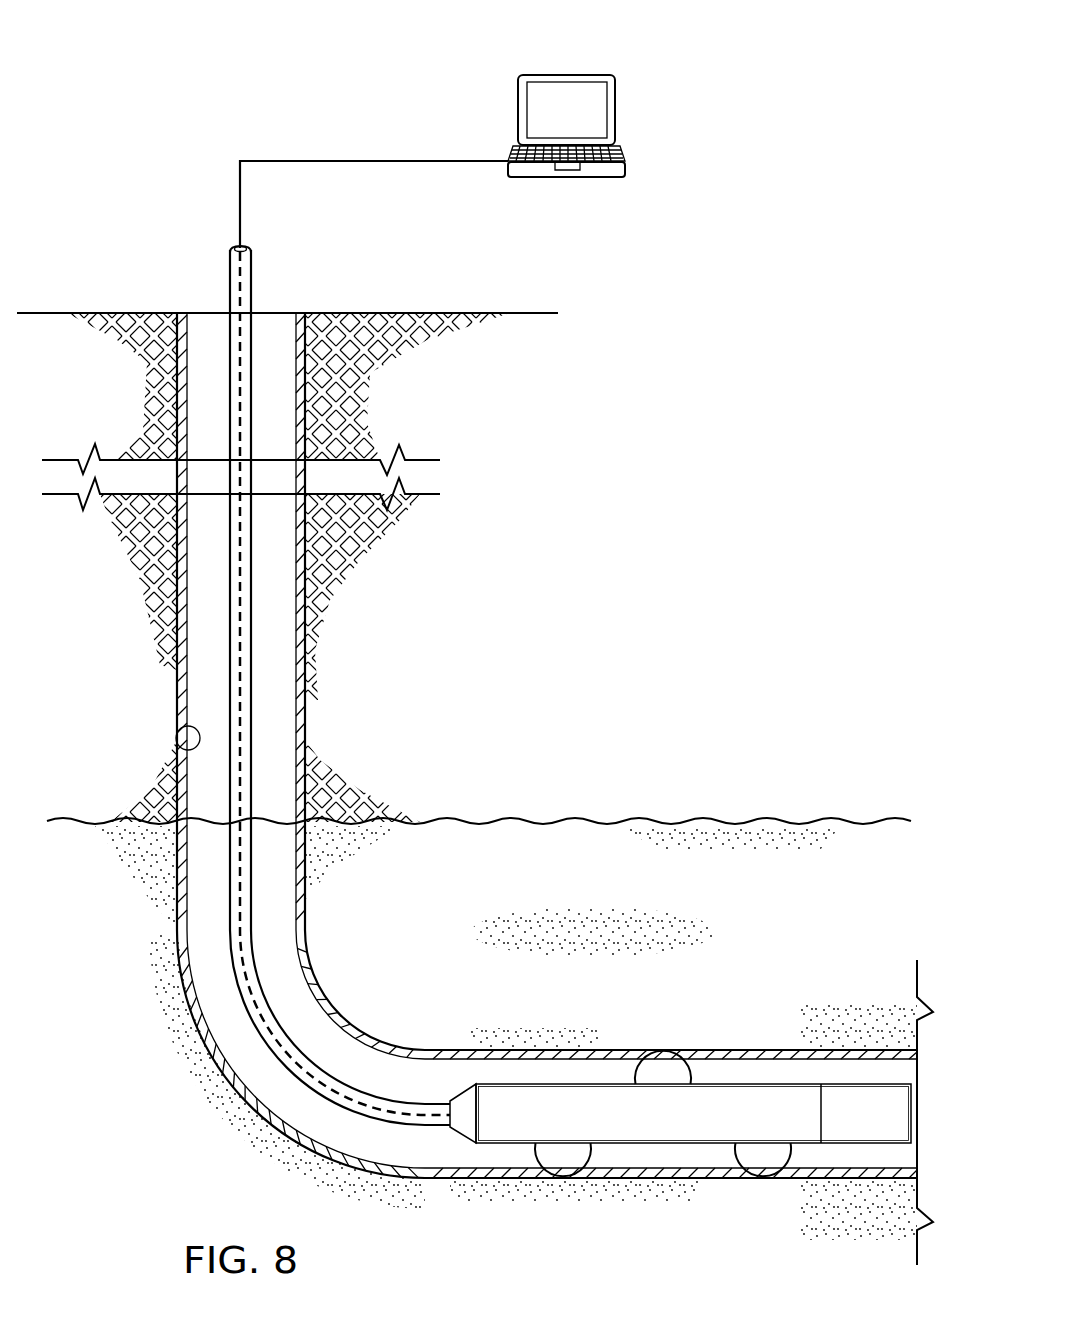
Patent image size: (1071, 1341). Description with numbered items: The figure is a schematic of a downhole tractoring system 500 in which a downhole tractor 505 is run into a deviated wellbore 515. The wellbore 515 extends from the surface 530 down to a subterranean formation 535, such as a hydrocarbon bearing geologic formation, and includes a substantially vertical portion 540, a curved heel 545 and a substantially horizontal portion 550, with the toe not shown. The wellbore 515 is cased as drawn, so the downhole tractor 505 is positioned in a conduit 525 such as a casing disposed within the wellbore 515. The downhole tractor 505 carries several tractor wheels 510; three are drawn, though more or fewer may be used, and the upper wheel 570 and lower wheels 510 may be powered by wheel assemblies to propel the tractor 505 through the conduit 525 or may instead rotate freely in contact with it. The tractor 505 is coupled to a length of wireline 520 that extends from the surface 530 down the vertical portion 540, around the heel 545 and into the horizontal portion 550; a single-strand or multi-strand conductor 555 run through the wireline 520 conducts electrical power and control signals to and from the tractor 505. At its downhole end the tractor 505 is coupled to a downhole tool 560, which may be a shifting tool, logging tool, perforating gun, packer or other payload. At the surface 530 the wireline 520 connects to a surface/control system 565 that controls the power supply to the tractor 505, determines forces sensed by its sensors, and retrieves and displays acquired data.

The downhole tractoring system 500 is at (188, 62).
The downhole tractor 505 is at (667, 1135).
The tractor wheel 510 is at (733, 1168).
The wellbore 515 is at (176, 984).
The wireline 520 is at (229, 721).
The conduit 525 is at (181, 730).
The surface 530 is at (130, 313).
The subterranean formation 535 is at (810, 949).
The vertical portion 540 is at (325, 668).
The heel 545 is at (345, 988).
The horizontal portion 550 is at (712, 1028).
The conductor 555 is at (232, 720).
The downhole tool 560 is at (859, 1097).
The surface/control system 565 is at (617, 113).
The upper roller 570 is at (637, 1078).